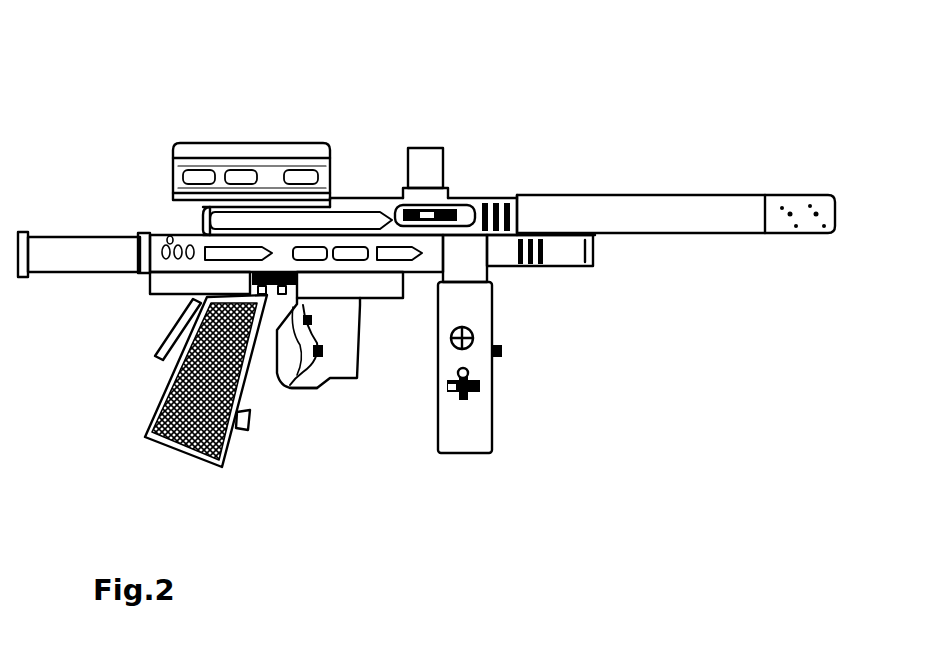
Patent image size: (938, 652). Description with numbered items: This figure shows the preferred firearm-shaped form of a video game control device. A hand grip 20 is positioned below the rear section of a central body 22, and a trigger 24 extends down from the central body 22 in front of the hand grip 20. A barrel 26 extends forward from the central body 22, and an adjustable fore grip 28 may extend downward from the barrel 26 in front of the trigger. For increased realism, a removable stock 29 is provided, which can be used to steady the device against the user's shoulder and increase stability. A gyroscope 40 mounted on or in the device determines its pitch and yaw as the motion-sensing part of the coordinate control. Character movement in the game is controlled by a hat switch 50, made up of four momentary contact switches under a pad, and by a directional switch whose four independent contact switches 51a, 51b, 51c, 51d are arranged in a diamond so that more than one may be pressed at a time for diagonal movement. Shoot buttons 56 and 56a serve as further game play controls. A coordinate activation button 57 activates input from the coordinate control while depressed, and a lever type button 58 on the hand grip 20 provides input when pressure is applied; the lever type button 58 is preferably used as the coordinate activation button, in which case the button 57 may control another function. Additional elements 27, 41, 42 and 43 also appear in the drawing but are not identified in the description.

The hand grip 20 is at (153, 460).
The central body 22 is at (167, 202).
The trigger 24 is at (327, 378).
The barrel 26 is at (555, 197).
The sight 27 is at (425, 160).
The adjustable fore grip 28 is at (477, 302).
The removable stock 29 is at (108, 257).
The gyroscope 40 is at (228, 152).
The lower frame strip 41 is at (243, 281).
The fastener 42 is at (278, 290).
The fastener 43 is at (283, 295).
The hat switch 50 is at (475, 335).
The independent contact switch 51a is at (477, 372).
The independent contact switch 51b is at (486, 388).
The independent contact switch 51c is at (470, 397).
The independent contact switch 51d is at (457, 397).
The shoot button 56 is at (323, 318).
The shoot button 56a is at (330, 350).
The coordinate activation button 57 is at (288, 393).
The lever type button 58 is at (157, 338).